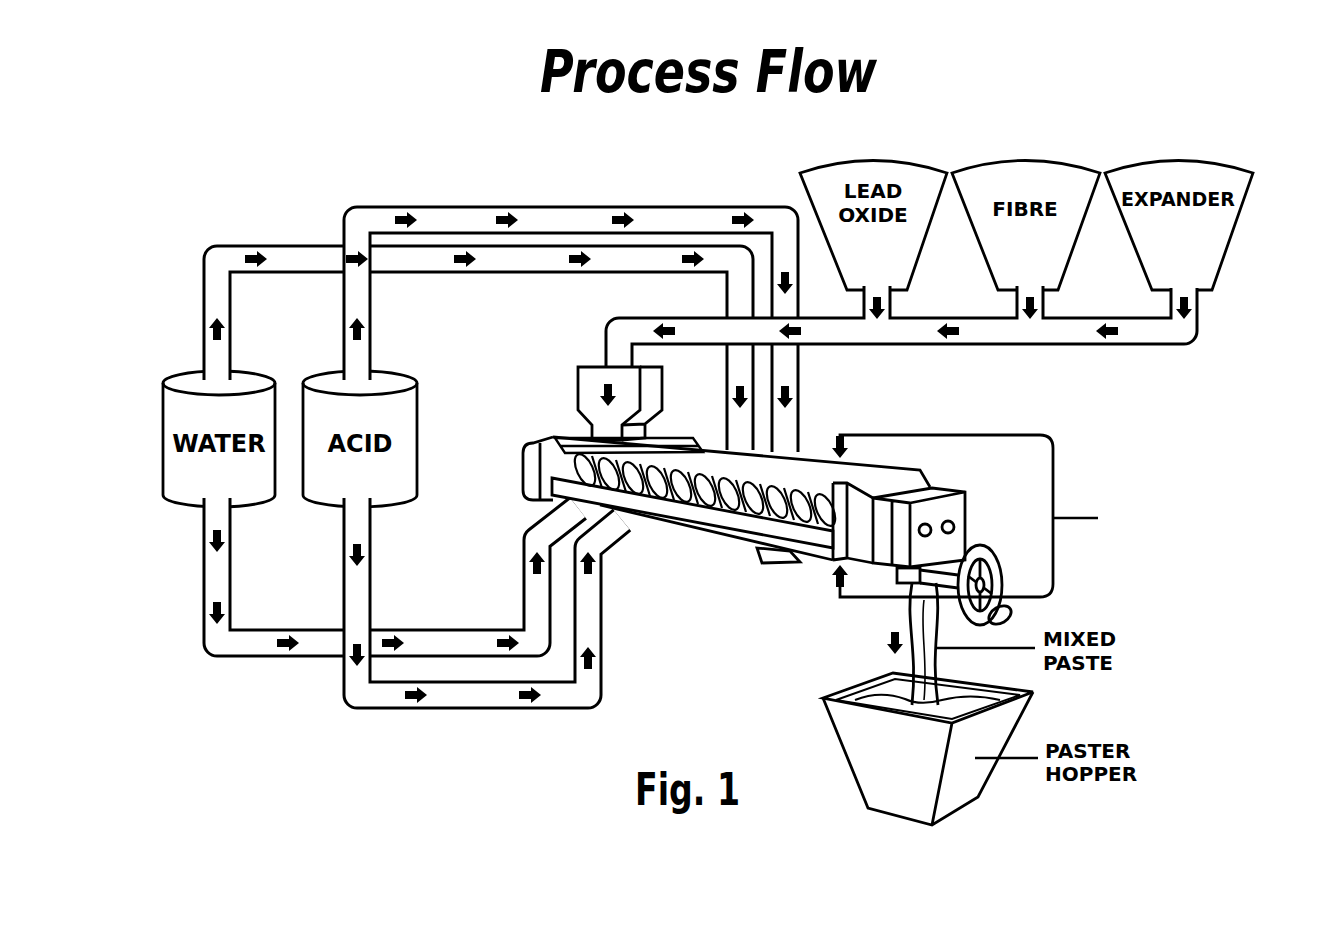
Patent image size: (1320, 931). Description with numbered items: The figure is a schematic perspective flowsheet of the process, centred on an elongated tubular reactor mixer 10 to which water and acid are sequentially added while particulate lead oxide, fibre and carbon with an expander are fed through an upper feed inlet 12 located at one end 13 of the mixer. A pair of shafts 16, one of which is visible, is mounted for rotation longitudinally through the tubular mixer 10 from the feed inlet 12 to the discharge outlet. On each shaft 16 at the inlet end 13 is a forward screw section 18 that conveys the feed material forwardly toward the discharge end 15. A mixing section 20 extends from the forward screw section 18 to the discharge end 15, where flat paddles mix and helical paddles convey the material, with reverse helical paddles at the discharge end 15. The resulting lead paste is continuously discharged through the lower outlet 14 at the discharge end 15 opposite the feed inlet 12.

The tubular mixer 10 is at (699, 562).
The upper feed inlet 12 is at (587, 377).
The inlet end 13 is at (523, 468).
The lower outlet 14 is at (898, 577).
The discharge end 15 is at (957, 517).
The shaft 16 is at (670, 470).
The forward screw section 18 is at (587, 457).
The mixing section 20 is at (796, 466).